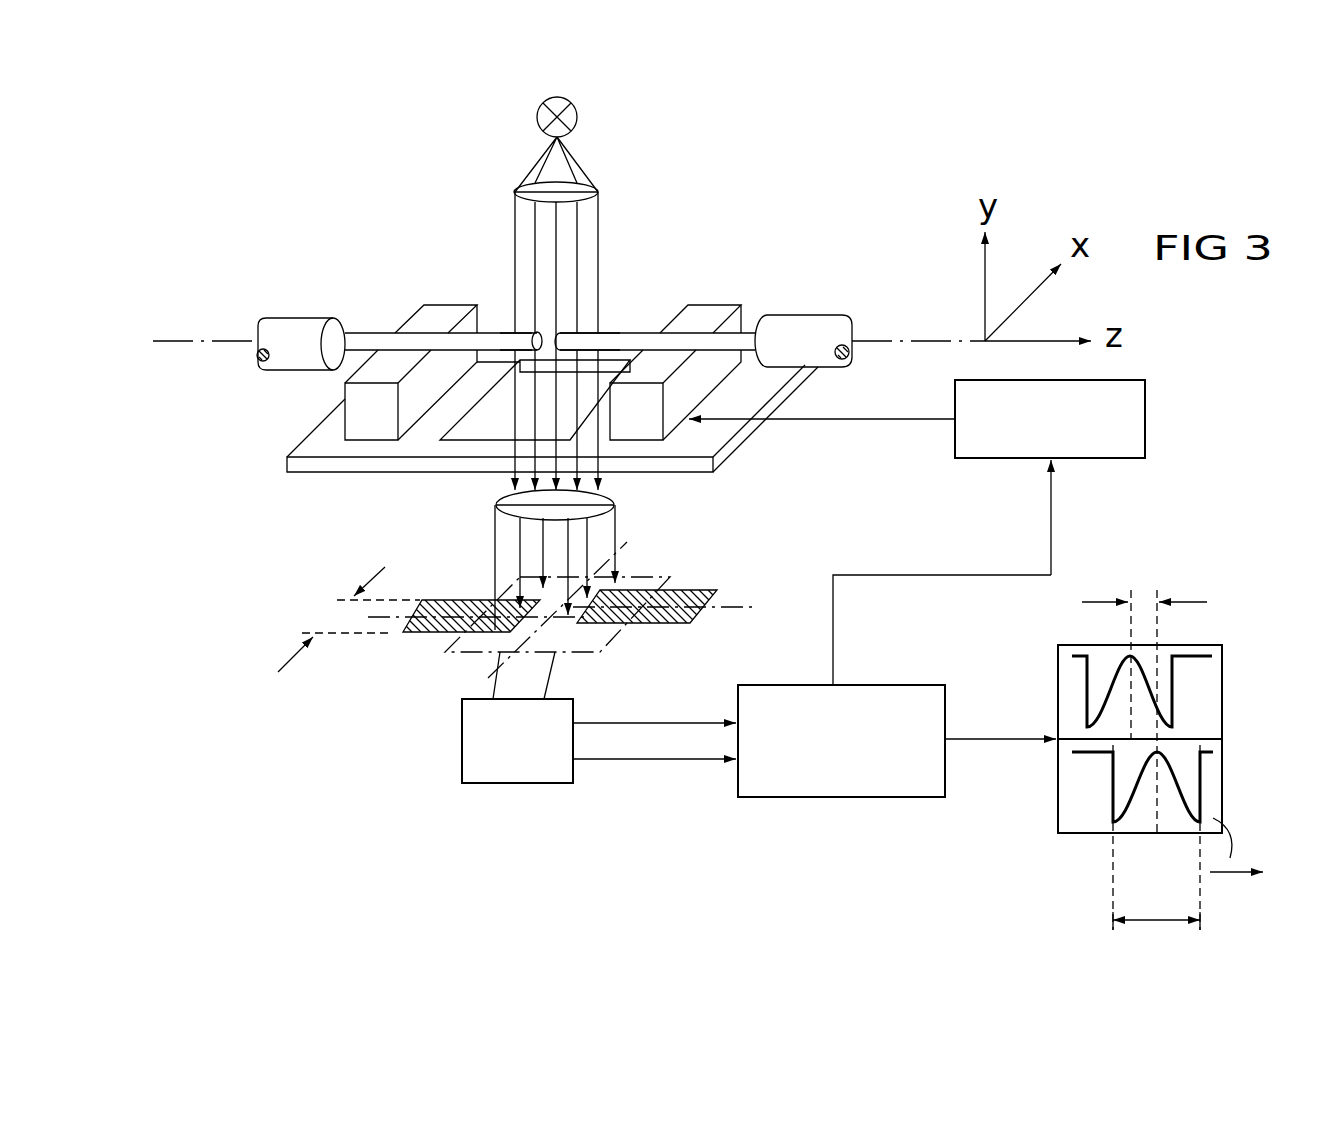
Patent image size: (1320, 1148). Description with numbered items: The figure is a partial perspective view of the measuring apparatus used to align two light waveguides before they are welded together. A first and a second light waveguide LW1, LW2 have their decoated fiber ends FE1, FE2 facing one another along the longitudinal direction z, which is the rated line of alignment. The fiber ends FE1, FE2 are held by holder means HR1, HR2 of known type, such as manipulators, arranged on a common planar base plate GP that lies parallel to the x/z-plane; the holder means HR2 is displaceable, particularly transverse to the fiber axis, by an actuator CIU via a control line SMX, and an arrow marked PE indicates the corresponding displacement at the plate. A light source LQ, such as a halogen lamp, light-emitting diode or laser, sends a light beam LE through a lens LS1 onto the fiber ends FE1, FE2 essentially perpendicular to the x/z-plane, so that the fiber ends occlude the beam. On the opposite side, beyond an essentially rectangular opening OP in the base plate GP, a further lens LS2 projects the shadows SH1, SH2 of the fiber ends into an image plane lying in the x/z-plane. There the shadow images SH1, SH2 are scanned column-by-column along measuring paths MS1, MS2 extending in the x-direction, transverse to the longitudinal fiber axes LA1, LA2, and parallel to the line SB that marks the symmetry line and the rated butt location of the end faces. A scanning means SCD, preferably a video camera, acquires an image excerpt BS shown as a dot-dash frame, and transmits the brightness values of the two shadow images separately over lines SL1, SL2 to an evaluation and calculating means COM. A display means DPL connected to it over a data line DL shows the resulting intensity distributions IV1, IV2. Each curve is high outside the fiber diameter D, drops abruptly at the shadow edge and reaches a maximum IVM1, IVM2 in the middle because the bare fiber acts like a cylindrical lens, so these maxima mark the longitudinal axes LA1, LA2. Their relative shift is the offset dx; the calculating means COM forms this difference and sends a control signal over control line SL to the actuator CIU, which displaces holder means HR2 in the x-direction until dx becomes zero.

The light source LQ is at (537, 113).
The lens LS1 is at (585, 182).
The light beam LE is at (543, 228).
The longitudinal fiber axis LA1 is at (205, 337).
The longitudinal fiber axis LA2 is at (908, 337).
The first light waveguide LW1 is at (295, 325).
The second light waveguide LW2 is at (800, 325).
The fiber end FE1 is at (500, 337).
The fiber end FE2 is at (622, 333).
The holder means HR1 is at (423, 320).
The holder means HR2 is at (707, 313).
The base plate GP is at (305, 442).
The positioning unit PE is at (330, 407).
The opening OP is at (490, 428).
The control line SMX is at (882, 420).
The actuator CIU is at (1050, 419).
The control line SL is at (1050, 543).
The lens LS2 is at (612, 500).
The shadow image SH1 is at (463, 600).
The shadow image SH2 is at (702, 588).
The image excerpt BS is at (637, 577).
The diameter D is at (333, 617).
The symmetry line SB is at (491, 684).
The measuring path MS1 is at (470, 655).
The measuring path MS2 is at (573, 635).
The scanning means SCD is at (500, 770).
The line SL1 is at (663, 760).
The line SL2 is at (625, 723).
The evaluation and calculating means COM is at (841, 741).
The data line DL is at (990, 737).
The display means DPL is at (1058, 797).
The offset dx is at (1143, 600).
The maximum IVM2 is at (1127, 658).
The intensity distribution IV2 is at (1147, 677).
The maximum IVM1 is at (1160, 750).
The intensity distribution IV1 is at (1183, 793).